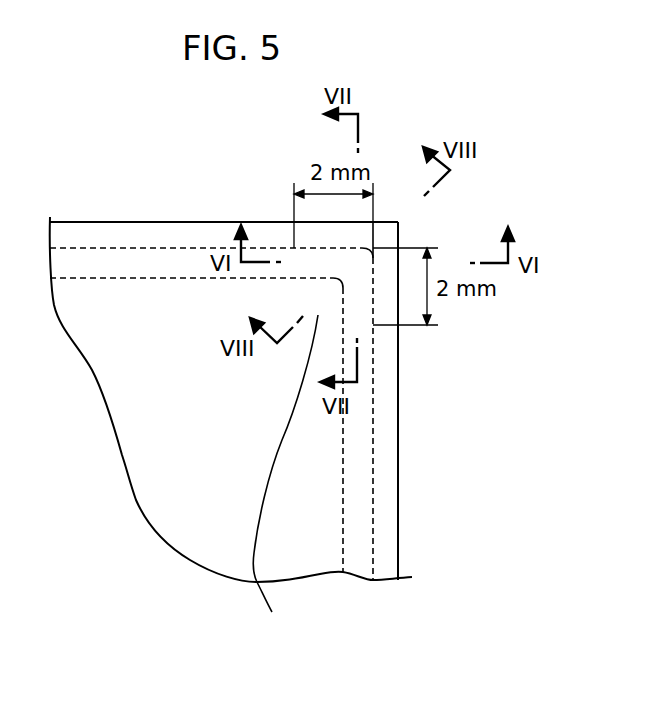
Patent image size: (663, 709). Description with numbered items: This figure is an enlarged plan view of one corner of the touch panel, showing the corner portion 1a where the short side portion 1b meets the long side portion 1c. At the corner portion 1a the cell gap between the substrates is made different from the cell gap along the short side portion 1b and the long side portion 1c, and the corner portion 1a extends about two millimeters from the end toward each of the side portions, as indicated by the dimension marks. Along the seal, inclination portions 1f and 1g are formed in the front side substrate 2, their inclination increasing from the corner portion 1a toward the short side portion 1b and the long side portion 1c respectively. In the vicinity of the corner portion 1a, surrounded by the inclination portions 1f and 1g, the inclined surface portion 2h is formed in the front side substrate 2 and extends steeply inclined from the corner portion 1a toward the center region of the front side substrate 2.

The corner portion 1a is at (367, 258).
The short side portion 1b is at (163, 260).
The long side portion 1c is at (362, 480).
The inclination portion 1f is at (263, 258).
The inclination portion 1g is at (360, 347).
The front side substrate 2 is at (165, 460).
The inclined surface portion 2h is at (285, 480).